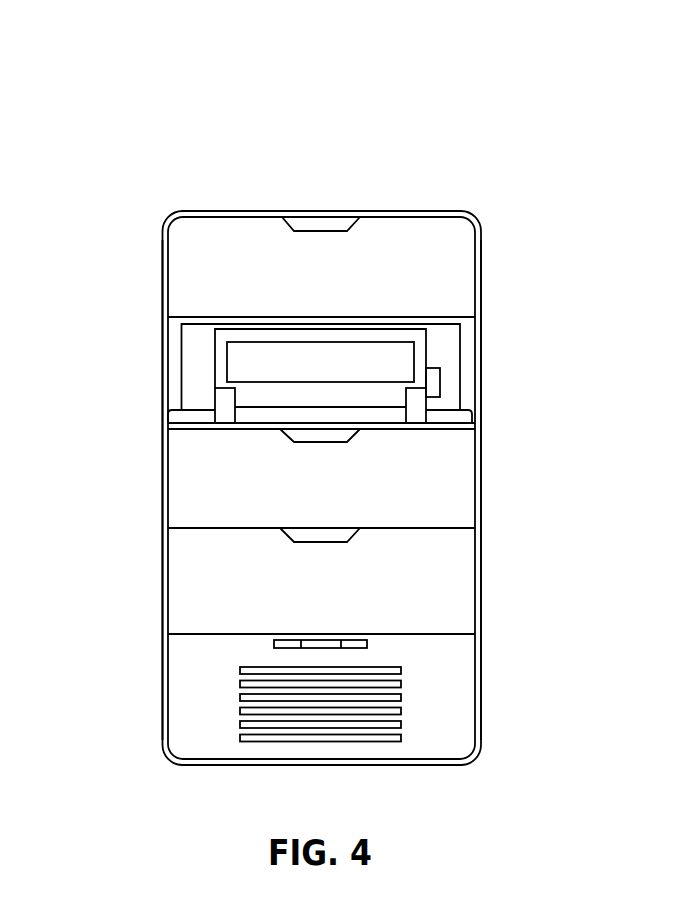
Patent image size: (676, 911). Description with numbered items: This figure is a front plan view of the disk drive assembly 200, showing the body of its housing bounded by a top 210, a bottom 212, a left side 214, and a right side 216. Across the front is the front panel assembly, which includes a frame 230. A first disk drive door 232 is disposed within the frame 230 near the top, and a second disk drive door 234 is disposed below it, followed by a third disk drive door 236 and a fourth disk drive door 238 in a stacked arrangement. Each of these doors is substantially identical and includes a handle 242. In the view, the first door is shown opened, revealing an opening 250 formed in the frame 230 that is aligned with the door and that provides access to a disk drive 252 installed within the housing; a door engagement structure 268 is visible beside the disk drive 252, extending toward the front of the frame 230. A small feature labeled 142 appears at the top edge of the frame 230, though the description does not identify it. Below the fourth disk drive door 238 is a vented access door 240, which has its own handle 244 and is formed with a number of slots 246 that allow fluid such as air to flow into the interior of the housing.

The disk drive assembly 200 is at (532, 136).
The top 210 is at (310, 213).
The speaker 142 is at (337, 229).
The frame 230 is at (166, 224).
The first disk drive door 232 is at (178, 261).
The opening 250 is at (180, 340).
The disk drive 252 is at (420, 341).
The door engagement structure 268 is at (428, 378).
The left side 214 is at (162, 387).
The right side 216 is at (477, 386).
The second disk drive door 234 is at (462, 420).
The third disk drive door 236 is at (178, 478).
The fourth disk drive door 238 is at (178, 581).
The vented access door 240 is at (178, 683).
The handle 242 is at (337, 437).
The handle 244 is at (360, 643).
The slots 246 is at (317, 733).
The bottom 212 is at (213, 765).